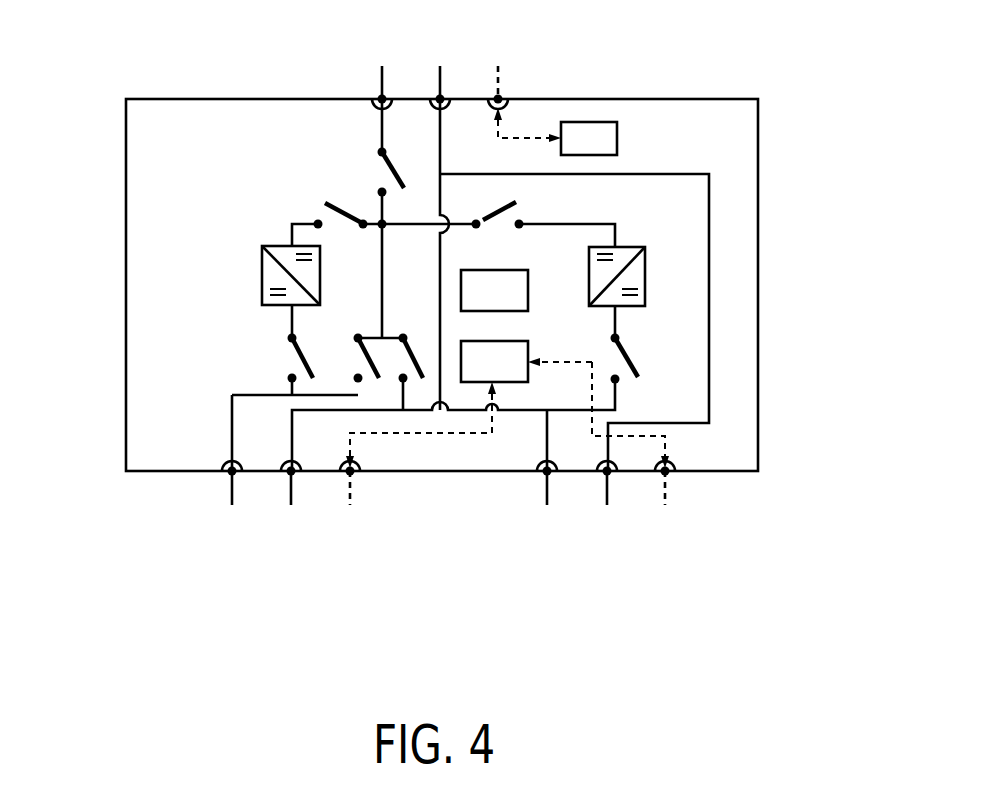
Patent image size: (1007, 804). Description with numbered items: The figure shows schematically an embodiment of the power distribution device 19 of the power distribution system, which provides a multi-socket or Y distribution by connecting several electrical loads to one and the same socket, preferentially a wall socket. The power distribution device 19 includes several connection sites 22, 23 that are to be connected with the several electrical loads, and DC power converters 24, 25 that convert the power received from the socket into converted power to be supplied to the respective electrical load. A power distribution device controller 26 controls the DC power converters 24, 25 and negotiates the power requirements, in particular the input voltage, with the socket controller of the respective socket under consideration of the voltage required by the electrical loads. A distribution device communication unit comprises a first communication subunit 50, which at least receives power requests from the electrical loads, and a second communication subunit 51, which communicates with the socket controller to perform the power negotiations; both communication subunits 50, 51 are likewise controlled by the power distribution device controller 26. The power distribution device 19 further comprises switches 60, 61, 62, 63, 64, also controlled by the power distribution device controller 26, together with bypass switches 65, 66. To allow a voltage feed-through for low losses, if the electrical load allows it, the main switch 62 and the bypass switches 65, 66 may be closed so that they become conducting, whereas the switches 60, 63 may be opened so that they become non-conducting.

The power distribution device 19 is at (758, 197).
The connection site 22 is at (215, 523).
The connection site 23 is at (674, 525).
The DC power converter 24 is at (262, 272).
The DC power converter 25 is at (645, 273).
The power distribution device controller 26 is at (528, 300).
The first communication subunit 50 is at (507, 383).
The second communication subunit 51 is at (596, 122).
The switch 60 is at (316, 192).
The switch 61 is at (272, 357).
The main switch 62 is at (402, 145).
The switch 63 is at (483, 194).
The switch 64 is at (654, 358).
The bypass switch 65 is at (374, 399).
The bypass switch 66 is at (422, 399).